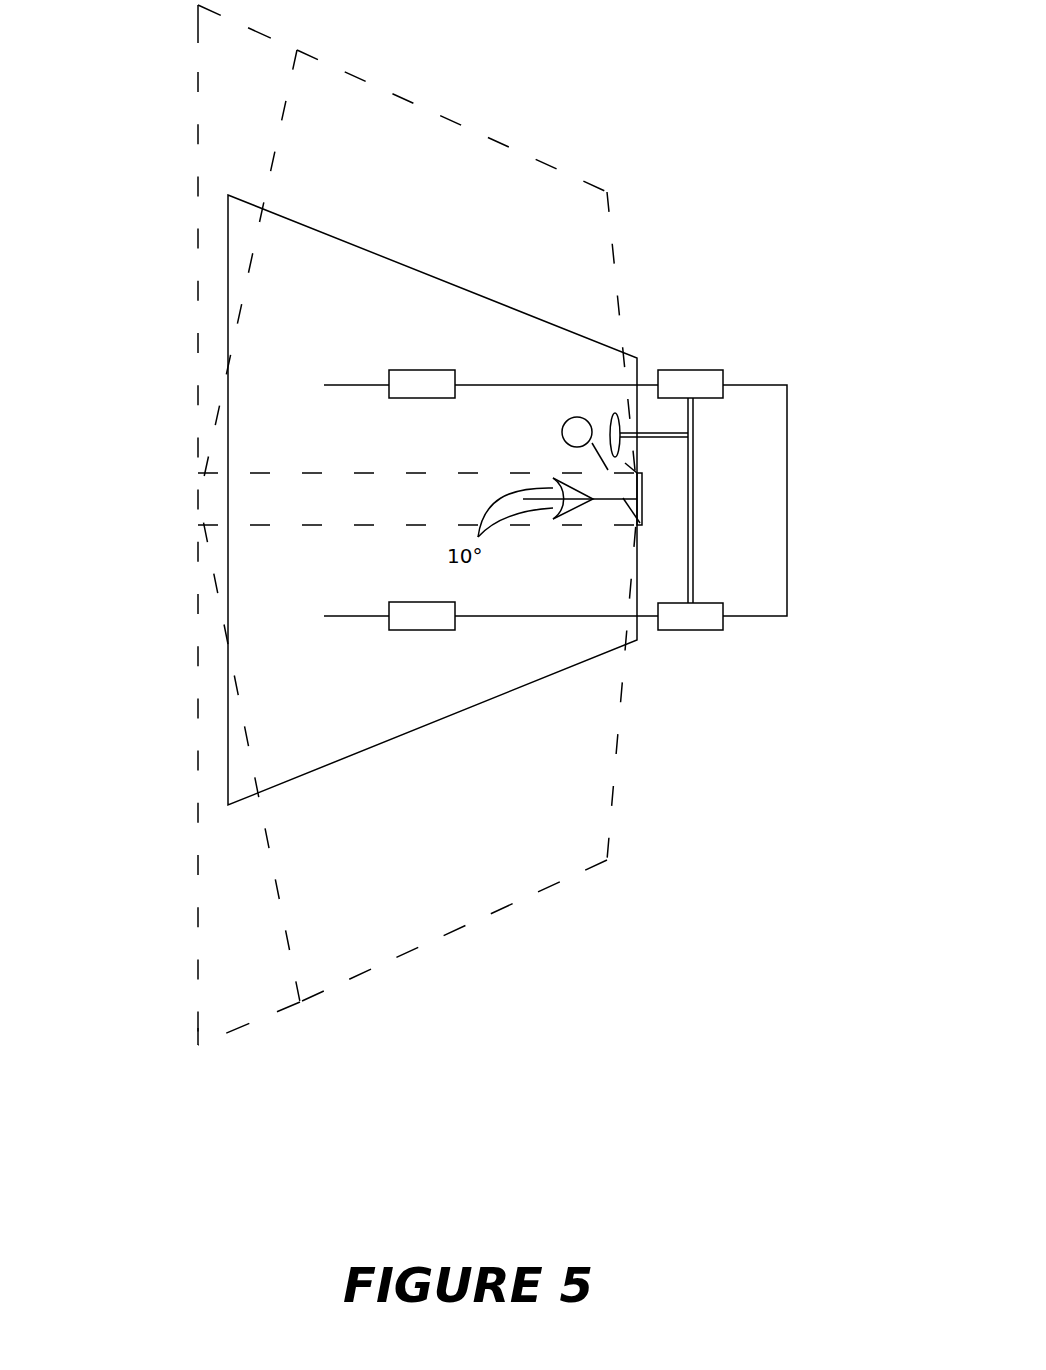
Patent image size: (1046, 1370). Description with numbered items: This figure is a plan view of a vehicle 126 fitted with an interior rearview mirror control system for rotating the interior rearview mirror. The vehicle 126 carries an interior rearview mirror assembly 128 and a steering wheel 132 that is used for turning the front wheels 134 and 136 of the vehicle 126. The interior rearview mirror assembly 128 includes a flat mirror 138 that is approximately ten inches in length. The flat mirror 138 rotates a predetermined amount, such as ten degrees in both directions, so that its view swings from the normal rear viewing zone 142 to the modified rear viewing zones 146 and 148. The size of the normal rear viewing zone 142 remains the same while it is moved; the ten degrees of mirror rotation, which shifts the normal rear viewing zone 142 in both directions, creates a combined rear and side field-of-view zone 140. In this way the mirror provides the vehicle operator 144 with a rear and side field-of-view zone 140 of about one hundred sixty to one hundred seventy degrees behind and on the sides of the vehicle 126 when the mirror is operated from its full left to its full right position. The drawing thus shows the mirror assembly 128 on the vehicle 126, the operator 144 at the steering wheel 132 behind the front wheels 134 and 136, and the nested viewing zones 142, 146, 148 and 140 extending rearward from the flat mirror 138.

The vehicle 126 is at (787, 500).
The interior rearview mirror assembly 128 is at (642, 487).
The steering wheel 132 is at (622, 428).
The front wheel 134 is at (707, 370).
The front wheel 136 is at (680, 630).
The flat mirror 138 is at (637, 513).
The rear and side field-of-view zone 140 is at (198, 607).
The normal rear viewing zone 142 is at (228, 288).
The vehicle operator 144 is at (565, 422).
The modified rear viewing zone 146 is at (285, 118).
The modified rear viewing zone 148 is at (285, 925).